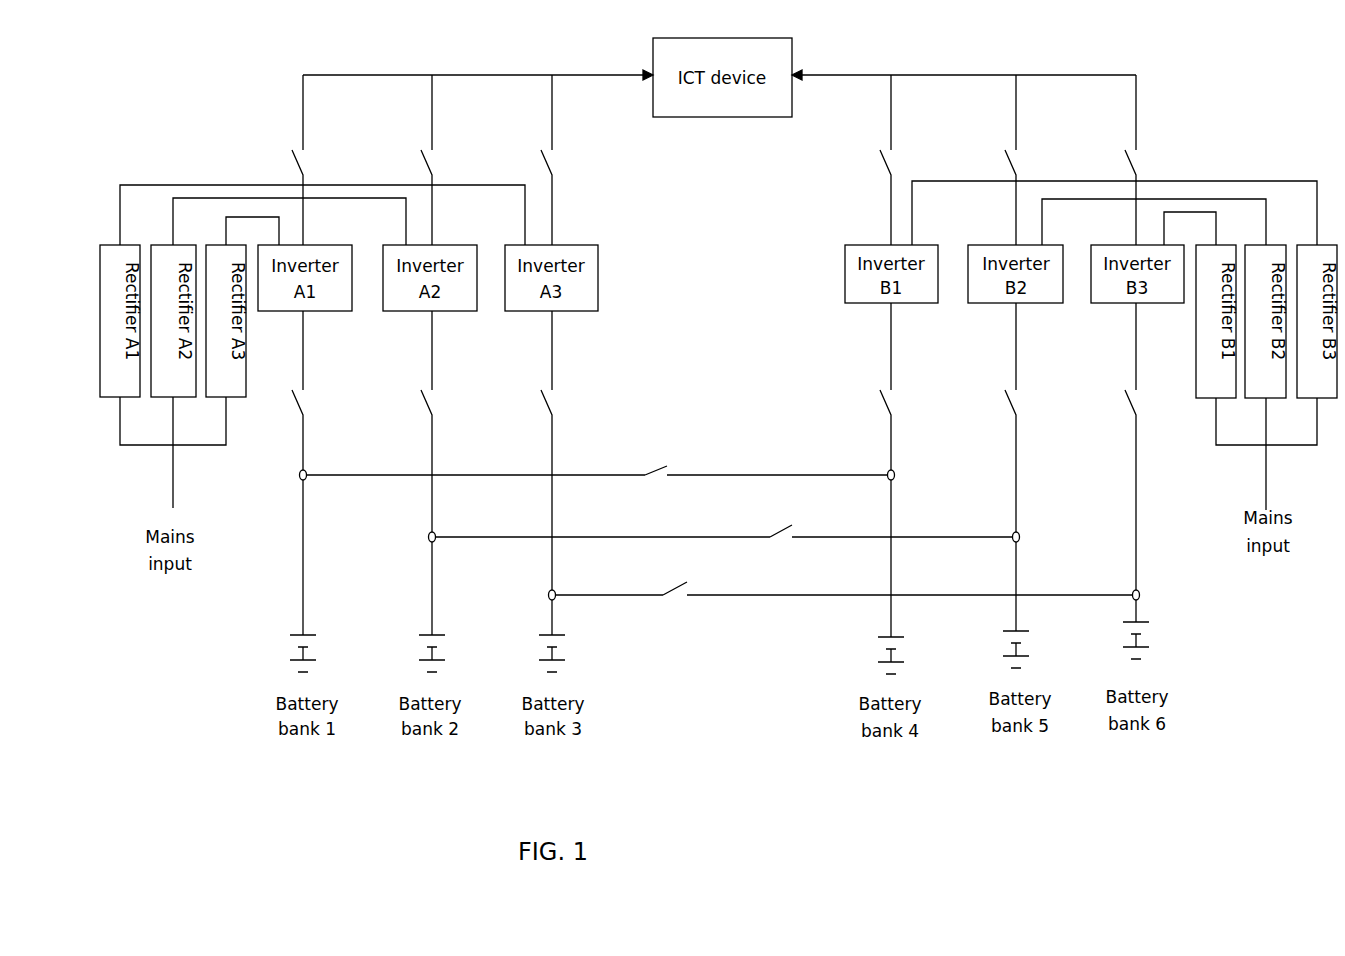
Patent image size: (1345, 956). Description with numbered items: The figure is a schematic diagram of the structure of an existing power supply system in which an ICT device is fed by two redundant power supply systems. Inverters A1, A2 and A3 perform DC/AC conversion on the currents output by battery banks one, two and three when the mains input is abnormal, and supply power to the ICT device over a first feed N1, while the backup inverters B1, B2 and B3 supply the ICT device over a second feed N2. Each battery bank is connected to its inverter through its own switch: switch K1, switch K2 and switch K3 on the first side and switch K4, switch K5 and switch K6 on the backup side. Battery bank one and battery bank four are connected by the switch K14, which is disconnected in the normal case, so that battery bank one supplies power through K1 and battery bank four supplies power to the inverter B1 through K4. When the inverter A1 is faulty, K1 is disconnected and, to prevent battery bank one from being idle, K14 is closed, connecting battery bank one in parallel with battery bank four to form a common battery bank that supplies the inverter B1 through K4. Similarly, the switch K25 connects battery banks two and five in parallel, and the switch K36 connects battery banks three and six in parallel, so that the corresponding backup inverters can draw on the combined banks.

The first ICT device input line N1 is at (478, 62).
The second ICT device input line N2 is at (964, 62).
The switch K1 is at (285, 390).
The switch between inverter A2 and battery bank 2 K2 is at (408, 421).
The switch between inverter A3 and battery bank 3 K3 is at (526, 450).
The switch K4 is at (865, 386).
The switch between inverter B2 and battery bank 5 K5 is at (990, 417).
The switch between inverter B3 and battery bank 6 K6 is at (1111, 446).
The switch K14 is at (597, 457).
The interconnection switch between battery banks 2 and 5 K25 is at (724, 517).
The interconnection switch between battery banks 3 and 6 K36 is at (844, 617).